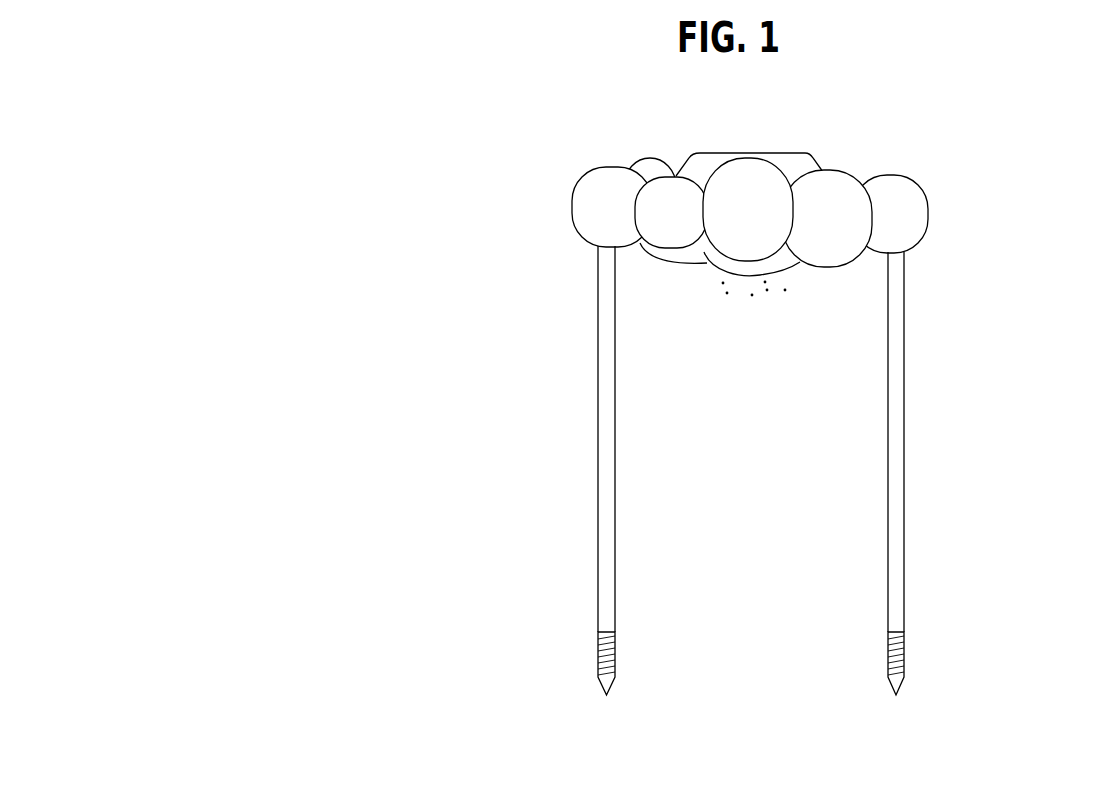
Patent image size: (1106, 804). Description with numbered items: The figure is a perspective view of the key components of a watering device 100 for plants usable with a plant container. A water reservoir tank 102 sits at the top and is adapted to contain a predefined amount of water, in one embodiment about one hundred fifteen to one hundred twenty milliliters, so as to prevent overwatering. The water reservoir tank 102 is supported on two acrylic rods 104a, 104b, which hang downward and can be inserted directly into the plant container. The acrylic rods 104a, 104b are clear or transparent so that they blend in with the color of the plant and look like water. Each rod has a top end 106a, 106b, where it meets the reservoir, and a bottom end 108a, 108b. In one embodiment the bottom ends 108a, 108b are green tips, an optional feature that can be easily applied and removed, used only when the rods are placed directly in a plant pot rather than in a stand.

The watering device 100 is at (323, 251).
The water reservoir tank 102 is at (828, 168).
The acrylic rod 104a is at (598, 472).
The acrylic rod 104b is at (900, 493).
The top end 106a is at (597, 242).
The top end 106b is at (903, 255).
The bottom end 108a is at (597, 670).
The bottom end 108b is at (902, 675).